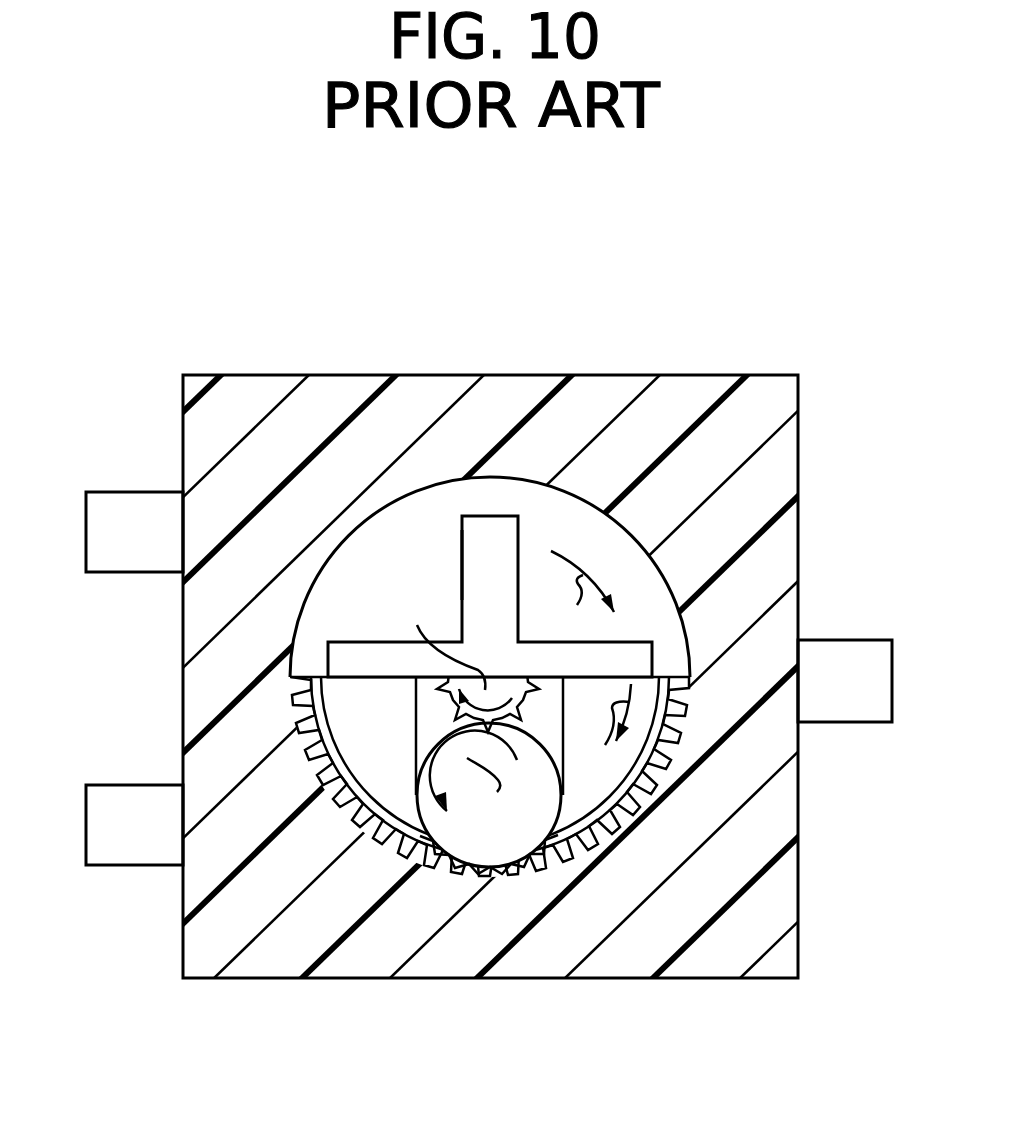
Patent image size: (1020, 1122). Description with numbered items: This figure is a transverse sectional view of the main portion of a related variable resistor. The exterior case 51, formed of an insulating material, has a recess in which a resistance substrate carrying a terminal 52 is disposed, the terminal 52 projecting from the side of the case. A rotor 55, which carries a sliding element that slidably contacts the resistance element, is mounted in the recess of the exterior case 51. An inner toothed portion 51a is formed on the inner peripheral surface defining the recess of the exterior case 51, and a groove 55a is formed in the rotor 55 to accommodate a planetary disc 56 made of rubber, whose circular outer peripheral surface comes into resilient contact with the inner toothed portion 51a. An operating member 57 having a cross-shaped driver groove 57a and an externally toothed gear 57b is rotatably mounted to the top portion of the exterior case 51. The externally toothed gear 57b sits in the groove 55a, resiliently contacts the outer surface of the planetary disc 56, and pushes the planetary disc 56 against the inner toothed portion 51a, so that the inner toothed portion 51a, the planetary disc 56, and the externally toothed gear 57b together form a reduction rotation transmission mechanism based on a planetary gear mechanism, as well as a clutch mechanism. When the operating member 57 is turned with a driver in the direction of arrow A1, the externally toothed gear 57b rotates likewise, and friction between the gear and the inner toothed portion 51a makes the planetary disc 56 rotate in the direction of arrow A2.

The exterior case 51 is at (785, 476).
The inner toothed portion 51a is at (657, 796).
The terminal 52 is at (835, 706).
The rotor 55 is at (342, 697).
The groove 55a is at (417, 718).
The planetary disc 56 is at (508, 850).
The operating member 57 is at (523, 497).
The cross-shaped driver groove 57a is at (470, 558).
The externally toothed gear 57b is at (342, 694).